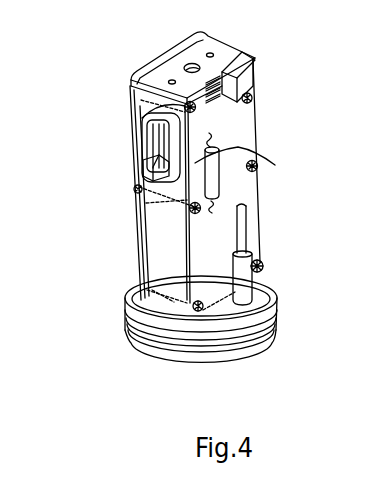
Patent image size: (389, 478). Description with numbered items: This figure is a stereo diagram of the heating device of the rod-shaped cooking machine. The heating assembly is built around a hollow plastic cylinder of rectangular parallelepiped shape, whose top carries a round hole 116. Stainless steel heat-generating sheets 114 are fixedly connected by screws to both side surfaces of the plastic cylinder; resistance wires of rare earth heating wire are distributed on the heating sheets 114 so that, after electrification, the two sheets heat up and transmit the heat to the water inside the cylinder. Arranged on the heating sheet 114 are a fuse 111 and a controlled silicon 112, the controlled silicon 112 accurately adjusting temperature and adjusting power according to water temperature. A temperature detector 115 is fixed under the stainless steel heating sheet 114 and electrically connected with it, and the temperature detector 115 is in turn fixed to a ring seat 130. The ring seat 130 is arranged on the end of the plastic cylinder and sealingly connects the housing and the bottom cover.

The hole 116 is at (217, 46).
The controlled silicon 112 is at (253, 78).
The stainless steel heat-generating sheets 114 is at (240, 135).
The fuse 111 is at (205, 168).
The temperature detector 115 is at (257, 260).
The ring seat 130 is at (131, 323).